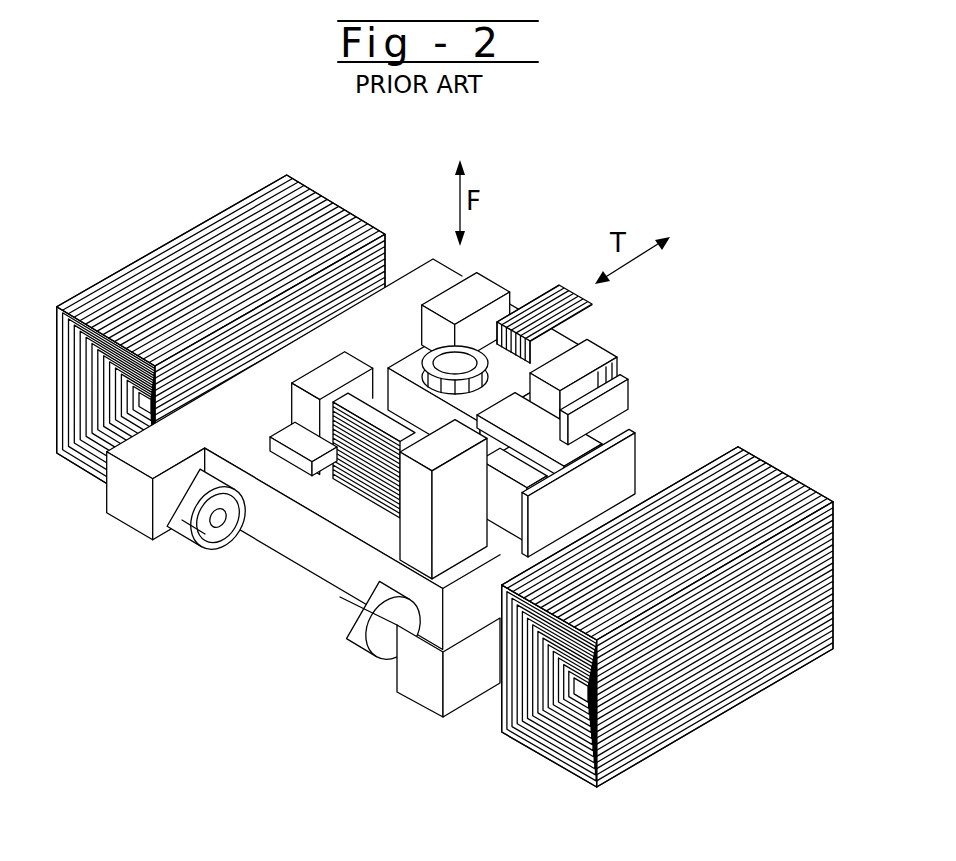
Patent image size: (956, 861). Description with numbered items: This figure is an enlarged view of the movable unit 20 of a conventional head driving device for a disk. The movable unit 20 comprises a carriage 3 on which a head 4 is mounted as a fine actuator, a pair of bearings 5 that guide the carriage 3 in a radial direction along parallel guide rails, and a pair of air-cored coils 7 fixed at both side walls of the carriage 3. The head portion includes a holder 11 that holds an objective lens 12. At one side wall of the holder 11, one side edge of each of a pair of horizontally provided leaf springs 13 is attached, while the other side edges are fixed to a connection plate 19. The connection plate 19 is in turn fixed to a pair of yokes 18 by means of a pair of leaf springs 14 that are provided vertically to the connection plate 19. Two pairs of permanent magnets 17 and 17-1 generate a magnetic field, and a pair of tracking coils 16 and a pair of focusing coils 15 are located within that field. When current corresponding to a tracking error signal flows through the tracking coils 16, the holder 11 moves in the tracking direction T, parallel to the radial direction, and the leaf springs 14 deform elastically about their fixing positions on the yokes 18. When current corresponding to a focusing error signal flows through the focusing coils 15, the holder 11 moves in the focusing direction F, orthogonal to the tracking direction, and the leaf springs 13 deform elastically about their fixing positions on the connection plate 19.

The carriage 3 is at (282, 546).
The head 4 is at (533, 480).
The bearing 5 is at (171, 538).
The air-cored coil 7 is at (160, 272).
The holder 11 is at (541, 338).
The objective lens 12 is at (458, 362).
The leaf spring 13 is at (555, 410).
The leaf spring 14 is at (614, 414).
The focusing coil 15 is at (338, 448).
The tracking coil 16 is at (390, 420).
The permanent magnet 17 is at (345, 386).
The permanent magnet 17-1 is at (474, 297).
The yoke 18 is at (305, 388).
The connection plate 19 is at (622, 479).
The movable unit 20 is at (326, 467).